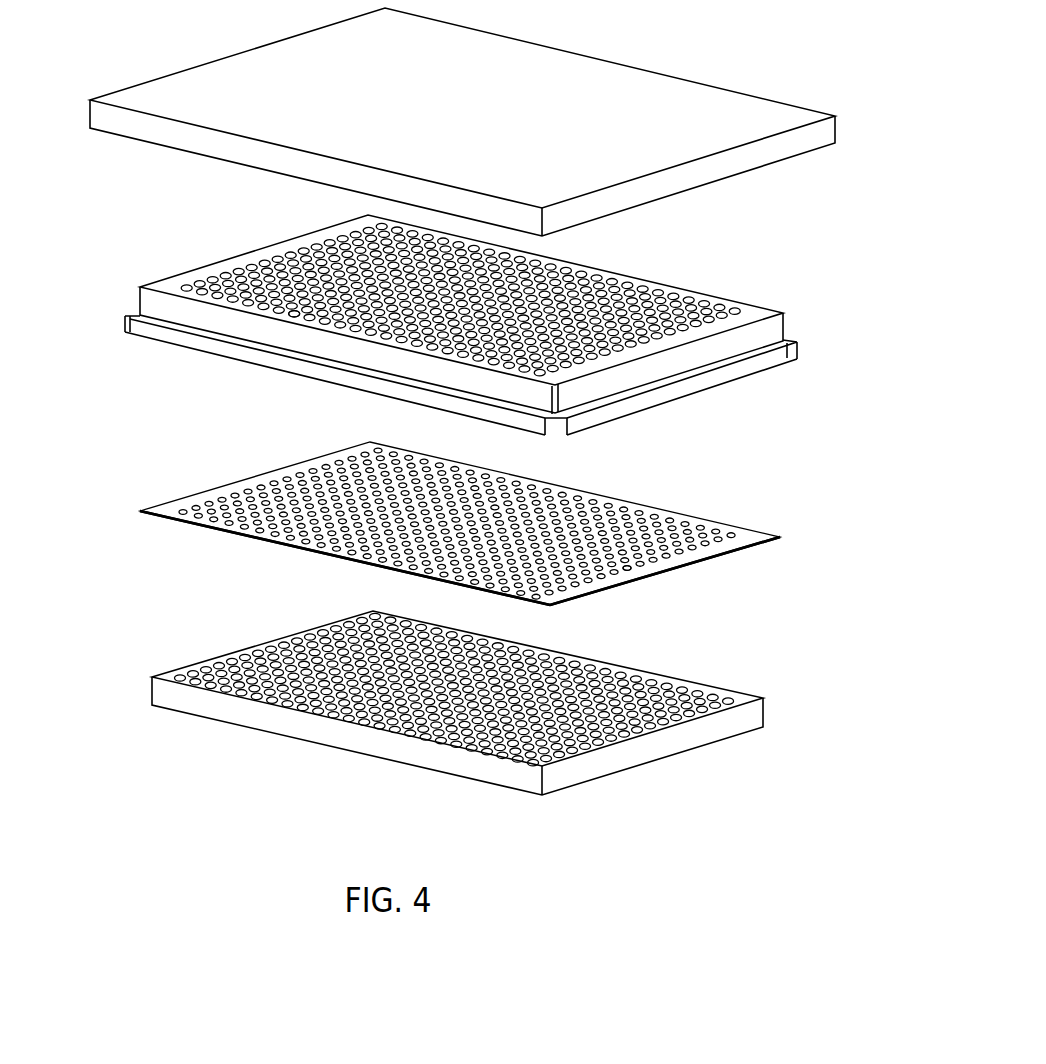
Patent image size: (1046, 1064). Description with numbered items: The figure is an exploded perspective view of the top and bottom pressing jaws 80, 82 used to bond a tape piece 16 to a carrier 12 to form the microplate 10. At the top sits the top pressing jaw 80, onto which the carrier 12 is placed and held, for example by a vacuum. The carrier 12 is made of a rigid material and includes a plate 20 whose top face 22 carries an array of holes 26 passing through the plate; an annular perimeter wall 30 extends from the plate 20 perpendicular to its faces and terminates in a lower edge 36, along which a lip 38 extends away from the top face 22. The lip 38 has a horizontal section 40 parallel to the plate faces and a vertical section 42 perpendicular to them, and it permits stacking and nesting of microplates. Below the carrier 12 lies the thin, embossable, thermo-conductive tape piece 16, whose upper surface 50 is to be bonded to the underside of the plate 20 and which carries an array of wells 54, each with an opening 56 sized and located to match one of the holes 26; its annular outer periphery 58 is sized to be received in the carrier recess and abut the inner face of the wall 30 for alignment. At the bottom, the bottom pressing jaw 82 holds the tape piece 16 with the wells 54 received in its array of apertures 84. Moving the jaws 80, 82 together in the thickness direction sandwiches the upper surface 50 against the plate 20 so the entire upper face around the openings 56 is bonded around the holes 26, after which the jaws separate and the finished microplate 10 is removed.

The microplate 10 is at (449, 415).
The carrier 12 is at (482, 329).
The tape piece 16 is at (467, 538).
The plate 20 is at (640, 353).
The top face 22 is at (757, 315).
The array of holes 26 is at (289, 316).
The annular perimeter wall 30 is at (460, 382).
The lower edge 36 is at (797, 358).
The lip 38 is at (273, 362).
The horizontal section 40 is at (129, 311).
The vertical section 42 is at (482, 331).
The upper surface 50 is at (172, 505).
The array of wells 54 is at (501, 598).
The opening 56 is at (631, 569).
The annular outer periphery 58 is at (781, 538).
The top pressing jaw 80 is at (615, 88).
The bottom pressing jaw 82 is at (457, 716).
The array of apertures 84 is at (688, 689).